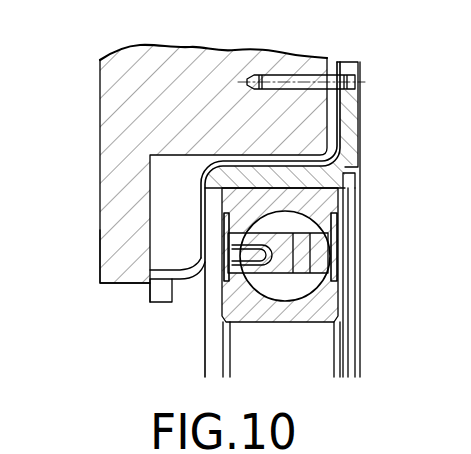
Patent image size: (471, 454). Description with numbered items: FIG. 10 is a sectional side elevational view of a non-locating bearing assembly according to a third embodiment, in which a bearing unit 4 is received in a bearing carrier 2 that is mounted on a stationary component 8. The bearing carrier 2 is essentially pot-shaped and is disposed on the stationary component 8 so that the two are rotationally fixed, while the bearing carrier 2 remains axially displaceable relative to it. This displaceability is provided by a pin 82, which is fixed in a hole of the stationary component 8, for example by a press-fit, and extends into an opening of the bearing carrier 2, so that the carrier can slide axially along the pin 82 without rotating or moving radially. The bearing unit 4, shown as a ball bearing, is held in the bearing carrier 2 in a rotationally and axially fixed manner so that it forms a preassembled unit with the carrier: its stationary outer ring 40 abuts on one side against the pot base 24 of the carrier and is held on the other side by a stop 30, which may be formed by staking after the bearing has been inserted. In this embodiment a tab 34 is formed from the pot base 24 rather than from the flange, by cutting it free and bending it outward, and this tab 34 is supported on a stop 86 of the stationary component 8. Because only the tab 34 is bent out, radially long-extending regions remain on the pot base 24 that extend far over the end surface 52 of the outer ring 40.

The stationary component 8 is at (141, 86).
The pin 82 is at (296, 82).
The bearing carrier 2 is at (355, 115).
The stop 30 is at (343, 190).
The outer ring 40 is at (341, 222).
The bearing unit 4 is at (365, 273).
The end surface 52 is at (207, 188).
The pot base 24 is at (205, 210).
The stop 86 is at (110, 265).
The tab 34 is at (158, 293).